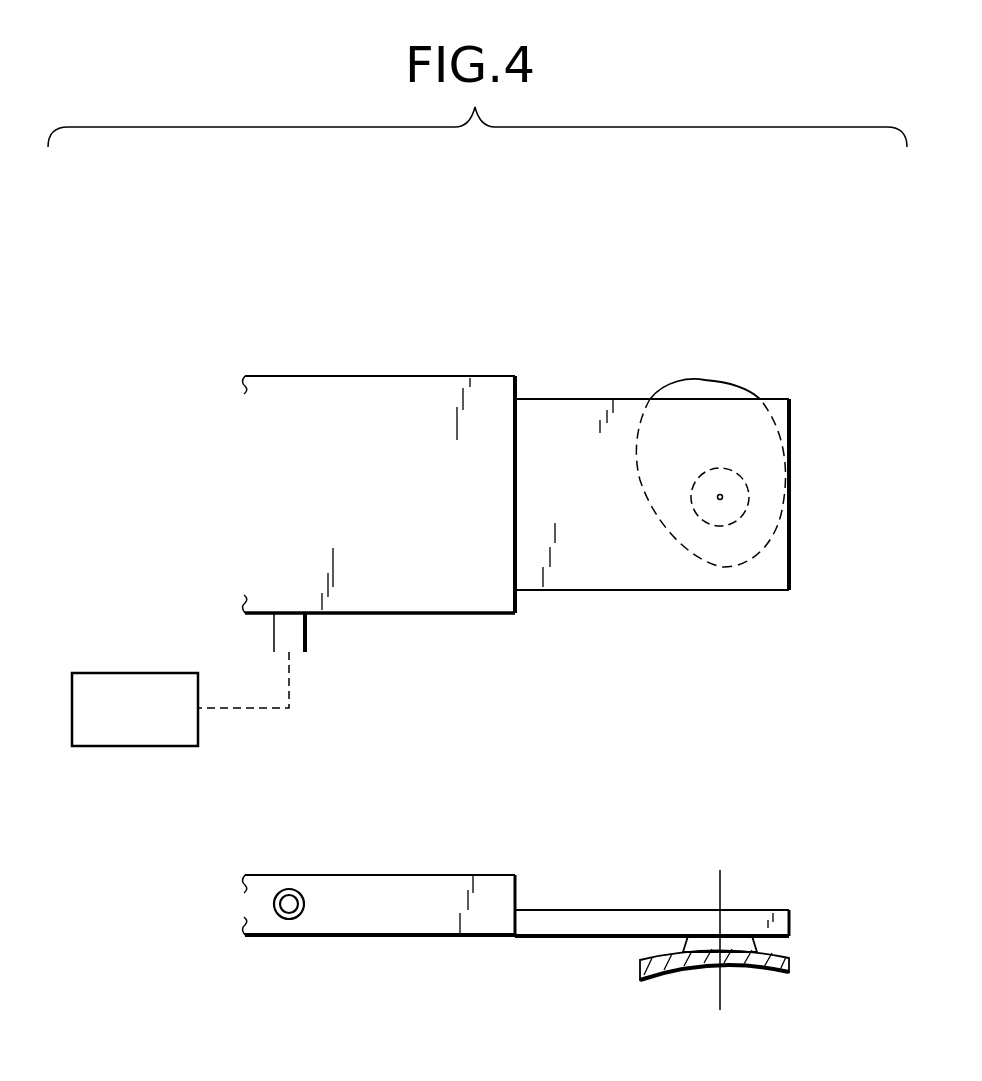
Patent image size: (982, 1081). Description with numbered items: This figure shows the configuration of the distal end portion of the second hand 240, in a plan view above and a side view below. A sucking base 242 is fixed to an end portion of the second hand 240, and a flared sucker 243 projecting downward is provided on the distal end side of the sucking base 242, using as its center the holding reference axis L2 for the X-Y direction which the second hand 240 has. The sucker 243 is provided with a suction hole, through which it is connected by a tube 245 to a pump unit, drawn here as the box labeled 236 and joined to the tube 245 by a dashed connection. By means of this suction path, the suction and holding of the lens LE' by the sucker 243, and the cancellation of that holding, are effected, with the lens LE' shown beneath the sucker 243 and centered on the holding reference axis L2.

The second hand 240 is at (324, 393).
The sucking base 242 is at (563, 406).
The sucker 243 is at (730, 526).
The tube 245 is at (308, 634).
The pump unit 236 is at (84, 672).
The holding reference axis L2 is at (722, 497).
The lens LE' is at (712, 680).